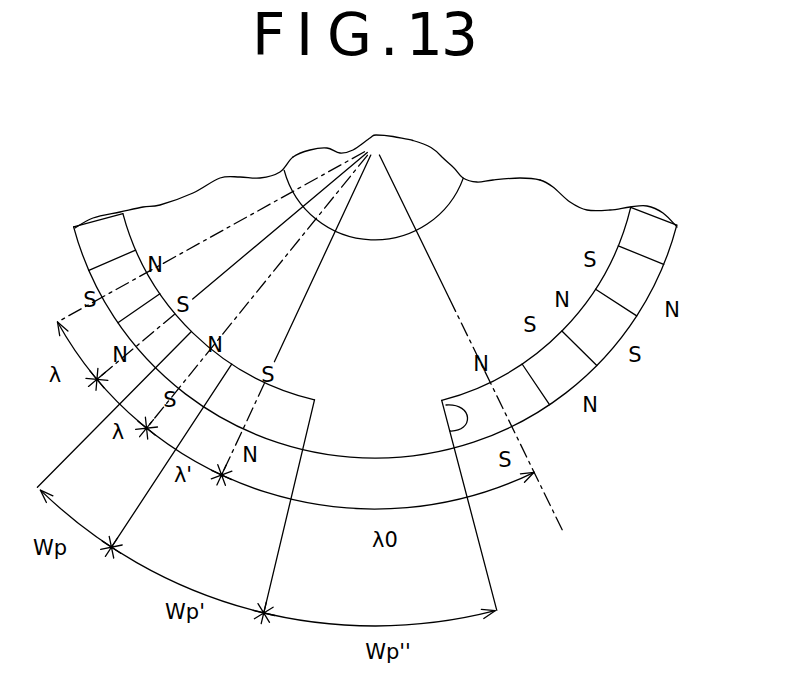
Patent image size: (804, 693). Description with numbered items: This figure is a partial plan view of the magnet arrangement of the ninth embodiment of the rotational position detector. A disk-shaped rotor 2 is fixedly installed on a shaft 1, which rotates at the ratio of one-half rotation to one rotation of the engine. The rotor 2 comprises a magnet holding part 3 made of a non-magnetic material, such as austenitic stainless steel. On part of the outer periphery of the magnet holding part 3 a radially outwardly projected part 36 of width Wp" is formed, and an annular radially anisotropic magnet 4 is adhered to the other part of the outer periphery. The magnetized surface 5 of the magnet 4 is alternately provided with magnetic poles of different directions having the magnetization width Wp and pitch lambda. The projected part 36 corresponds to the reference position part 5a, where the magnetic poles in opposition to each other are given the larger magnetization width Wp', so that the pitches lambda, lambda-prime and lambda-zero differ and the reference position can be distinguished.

The shaft 1 is at (428, 146).
The rotor 2 is at (237, 189).
The magnet holding part 3 is at (542, 180).
The magnet 4 is at (653, 214).
The magnetized surface 5 is at (659, 276).
The reference position part 5a is at (351, 463).
The projected part 36 is at (442, 411).